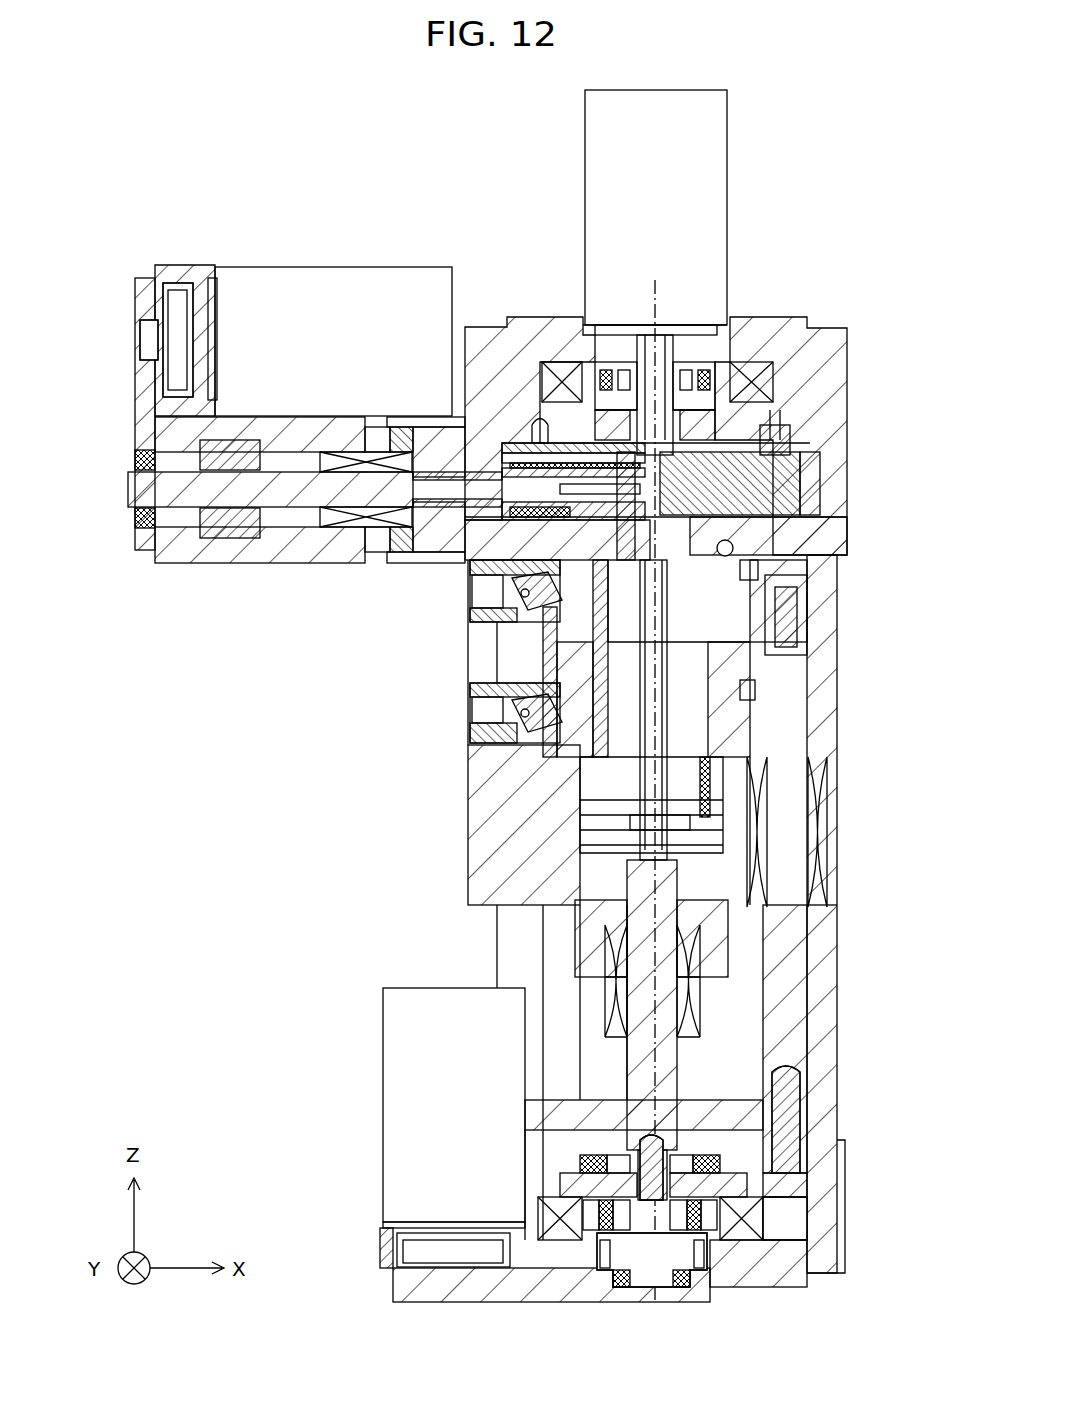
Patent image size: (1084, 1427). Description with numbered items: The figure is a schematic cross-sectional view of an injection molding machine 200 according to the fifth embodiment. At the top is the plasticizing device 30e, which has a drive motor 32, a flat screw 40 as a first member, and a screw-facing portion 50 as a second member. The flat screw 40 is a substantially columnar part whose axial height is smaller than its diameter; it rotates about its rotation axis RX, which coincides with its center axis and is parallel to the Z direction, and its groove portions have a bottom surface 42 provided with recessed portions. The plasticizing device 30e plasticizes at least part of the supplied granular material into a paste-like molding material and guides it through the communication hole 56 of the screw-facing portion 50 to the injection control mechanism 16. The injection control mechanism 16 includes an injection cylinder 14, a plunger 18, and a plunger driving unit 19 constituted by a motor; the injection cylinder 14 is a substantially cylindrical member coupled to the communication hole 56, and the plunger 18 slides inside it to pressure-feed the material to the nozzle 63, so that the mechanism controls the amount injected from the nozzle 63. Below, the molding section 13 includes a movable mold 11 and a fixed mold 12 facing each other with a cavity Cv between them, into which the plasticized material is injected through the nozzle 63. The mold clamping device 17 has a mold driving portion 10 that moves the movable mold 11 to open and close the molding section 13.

The mold driving portion 10 is at (382, 1100).
The movable mold 11 is at (540, 670).
The fixed mold 12 is at (525, 632).
The molding section 13 is at (400, 708).
The injection cylinder 14 is at (585, 492).
The injection control mechanism 16 is at (300, 632).
The mold clamping device 17 is at (435, 961).
The plunger 18 is at (300, 508).
The plunger driving unit 19 is at (332, 285).
The plasticizing device 30e is at (530, 277).
The drive motor 32 is at (730, 205).
The flat screw 40 is at (553, 355).
The bottom surface 42 is at (778, 385).
The screw-facing portion 50 is at (822, 470).
The communication hole 56 is at (830, 516).
The nozzle 63 is at (745, 597).
The injection molding machine 200 is at (347, 810).
The rotation axis RX is at (654, 296).
The cavity Cv is at (663, 668).